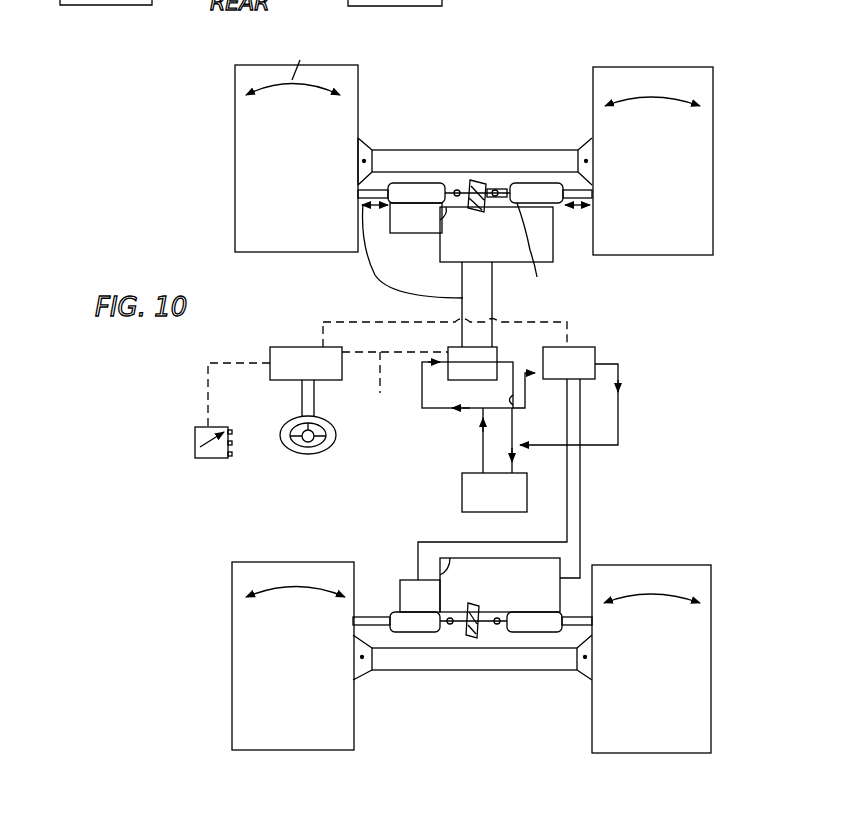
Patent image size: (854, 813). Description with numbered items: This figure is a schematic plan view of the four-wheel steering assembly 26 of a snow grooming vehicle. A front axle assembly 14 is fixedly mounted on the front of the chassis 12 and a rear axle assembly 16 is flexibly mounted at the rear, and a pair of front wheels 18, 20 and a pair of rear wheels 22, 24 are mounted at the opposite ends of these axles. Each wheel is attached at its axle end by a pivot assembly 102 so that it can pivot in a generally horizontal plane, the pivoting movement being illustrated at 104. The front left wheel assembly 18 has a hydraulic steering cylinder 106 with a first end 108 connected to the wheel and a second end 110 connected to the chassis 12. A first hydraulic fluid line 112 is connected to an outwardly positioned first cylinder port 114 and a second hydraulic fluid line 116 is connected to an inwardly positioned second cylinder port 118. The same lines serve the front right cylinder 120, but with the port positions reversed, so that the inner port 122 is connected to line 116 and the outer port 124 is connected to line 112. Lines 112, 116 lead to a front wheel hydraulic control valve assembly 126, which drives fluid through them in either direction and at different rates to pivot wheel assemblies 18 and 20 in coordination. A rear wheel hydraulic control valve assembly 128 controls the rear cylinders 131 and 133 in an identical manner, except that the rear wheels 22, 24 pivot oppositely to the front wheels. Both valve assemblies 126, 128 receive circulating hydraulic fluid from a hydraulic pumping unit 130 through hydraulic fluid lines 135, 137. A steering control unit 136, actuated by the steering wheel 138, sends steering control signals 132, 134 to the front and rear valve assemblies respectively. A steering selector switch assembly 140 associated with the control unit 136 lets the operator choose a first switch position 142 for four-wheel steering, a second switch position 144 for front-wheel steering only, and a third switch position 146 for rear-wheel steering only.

The chassis 12 is at (483, 208).
The front axle assembly 14 is at (474, 150).
The rear axle assembly 16 is at (460, 677).
The front left wheel assembly 18 is at (265, 62).
The front right wheel assembly 20 is at (665, 65).
The rear left wheel assembly 22 is at (262, 557).
The rear right wheel assembly 24 is at (668, 555).
The four-wheel steering assembly 26 is at (175, 373).
The pivot assembly 102 is at (361, 142).
The pivoting movement 104 is at (302, 62).
The hydraulic steering cylinder 106 is at (410, 185).
The first end 108 is at (368, 186).
The second end 110 is at (458, 185).
The first hydraulic fluid line 112 is at (398, 212).
The first cylinder port 114 is at (388, 208).
The second hydraulic fluid line 116 is at (442, 210).
The second cylinder port 118 is at (470, 236).
The front right cylinder 120 is at (535, 192).
The inner port 122 is at (549, 256).
The outer port 124 is at (574, 206).
The front wheel hydraulic control valve assembly 126 is at (448, 375).
The rear wheel hydraulic control valve assembly 128 is at (580, 360).
The hydraulic pumping unit 130 is at (520, 497).
The rear cylinder 131 is at (414, 627).
The steering control signal 132 is at (386, 384).
The rear cylinder 133 is at (534, 618).
The steering control signal 134 is at (567, 336).
The hydraulic fluid line 135 is at (516, 428).
The steering control unit 136 is at (274, 350).
The hydraulic fluid line 137 is at (483, 456).
The steering wheel 138 is at (316, 462).
The steering selector switch assembly 140 is at (195, 450).
The first switch position 142 is at (232, 432).
The second switch position 144 is at (232, 443).
The third switch position 146 is at (232, 454).